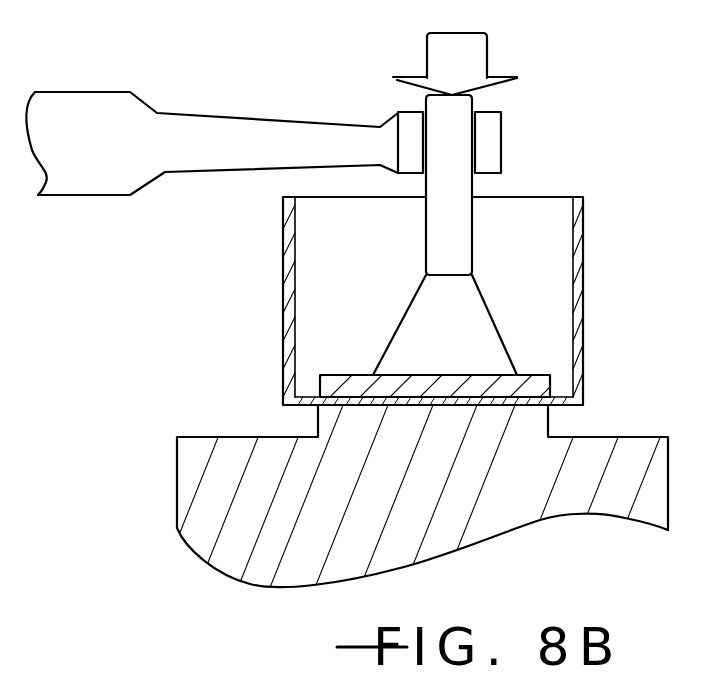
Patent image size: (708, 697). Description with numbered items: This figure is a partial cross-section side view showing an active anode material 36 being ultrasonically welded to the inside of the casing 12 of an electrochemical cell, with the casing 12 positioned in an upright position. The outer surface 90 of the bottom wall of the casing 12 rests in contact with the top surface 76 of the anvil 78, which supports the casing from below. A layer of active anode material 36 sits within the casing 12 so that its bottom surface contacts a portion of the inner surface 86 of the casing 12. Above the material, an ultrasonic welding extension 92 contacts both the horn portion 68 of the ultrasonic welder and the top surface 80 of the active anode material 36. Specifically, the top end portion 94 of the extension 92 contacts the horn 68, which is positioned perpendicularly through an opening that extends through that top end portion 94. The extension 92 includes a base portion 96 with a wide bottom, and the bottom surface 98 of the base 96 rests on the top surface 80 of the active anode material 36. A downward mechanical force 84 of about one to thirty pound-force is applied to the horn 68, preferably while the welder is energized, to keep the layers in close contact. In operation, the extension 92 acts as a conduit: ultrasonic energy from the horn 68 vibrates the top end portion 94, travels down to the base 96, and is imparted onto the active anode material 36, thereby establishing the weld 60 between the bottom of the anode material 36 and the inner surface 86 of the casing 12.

The casing 12 is at (587, 271).
The active anode electrode material 36 is at (550, 385).
The ultrasonic weld 60 is at (573, 396).
The horn portion 68 is at (493, 143).
The top surface of the anvil 76 is at (302, 401).
The anvil 78 is at (197, 498).
The top surface of the active anode material 80 is at (357, 375).
The mechanical force 84 is at (471, 55).
The inner surface of the casing 86 is at (307, 397).
The outer surface of the bottom wall 90 is at (562, 406).
The ultrasonic welding extension 92 is at (463, 215).
The top end portion of the welding extension 94 is at (450, 113).
The base portion of the extension 96 is at (473, 323).
The bottom surface of the base 98 is at (401, 380).